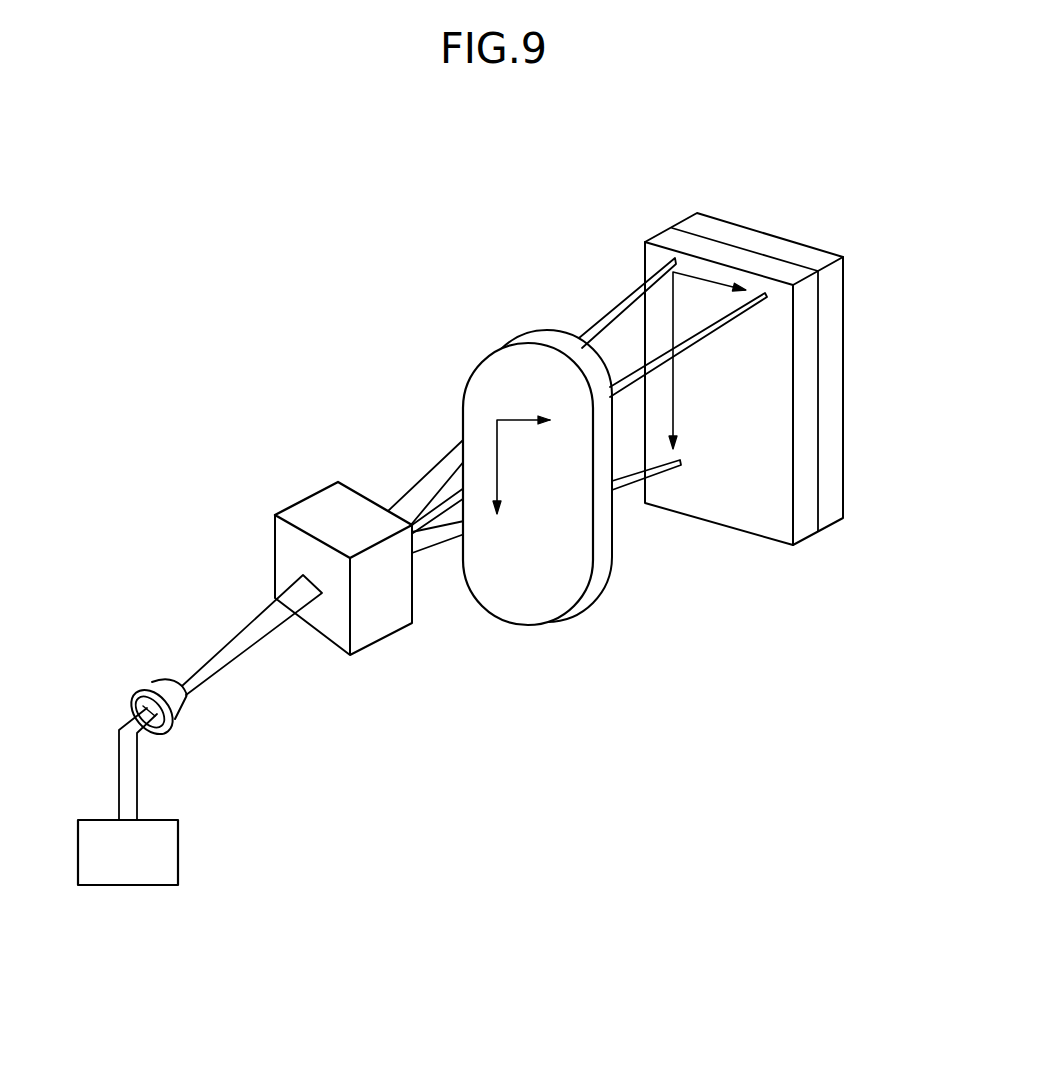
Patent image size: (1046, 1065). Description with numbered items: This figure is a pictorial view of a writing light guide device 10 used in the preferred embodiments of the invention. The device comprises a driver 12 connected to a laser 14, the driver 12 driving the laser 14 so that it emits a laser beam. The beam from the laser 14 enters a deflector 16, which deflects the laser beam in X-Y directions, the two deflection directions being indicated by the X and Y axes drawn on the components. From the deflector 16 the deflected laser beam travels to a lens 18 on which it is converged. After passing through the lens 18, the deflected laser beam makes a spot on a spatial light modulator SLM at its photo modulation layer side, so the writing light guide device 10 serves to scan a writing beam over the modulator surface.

The writing light guide device 10 is at (538, 766).
The driver 12 is at (178, 850).
The laser 14 is at (178, 710).
The deflector 16 is at (387, 636).
The lens 18 is at (550, 623).
The spatial light modulator SLM is at (843, 487).